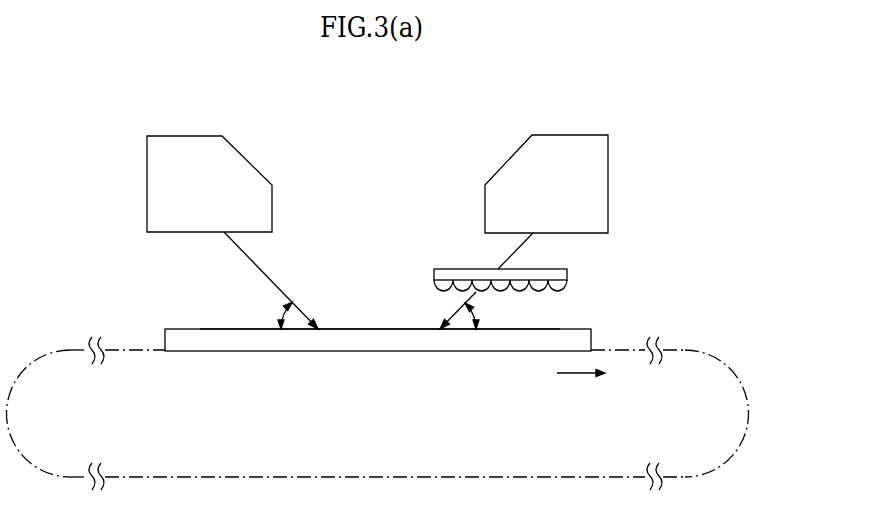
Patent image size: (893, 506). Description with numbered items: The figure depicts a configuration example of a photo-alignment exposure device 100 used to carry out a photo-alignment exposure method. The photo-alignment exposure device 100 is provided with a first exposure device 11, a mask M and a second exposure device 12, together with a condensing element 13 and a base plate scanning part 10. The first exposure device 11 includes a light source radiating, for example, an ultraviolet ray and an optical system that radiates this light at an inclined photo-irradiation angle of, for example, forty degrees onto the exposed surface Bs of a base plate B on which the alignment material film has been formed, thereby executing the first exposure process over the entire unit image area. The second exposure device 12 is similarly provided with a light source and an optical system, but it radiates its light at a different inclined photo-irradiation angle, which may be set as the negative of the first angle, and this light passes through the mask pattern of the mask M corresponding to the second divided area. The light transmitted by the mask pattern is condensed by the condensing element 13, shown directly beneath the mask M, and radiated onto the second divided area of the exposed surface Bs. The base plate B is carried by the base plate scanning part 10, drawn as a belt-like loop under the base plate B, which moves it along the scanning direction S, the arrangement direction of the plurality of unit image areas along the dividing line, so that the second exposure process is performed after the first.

The photo-alignment exposure device 100 is at (652, 142).
The base plate scanning part 10 is at (738, 373).
The first exposure device 11 is at (195, 135).
The second exposure device 12 is at (568, 135).
The condensing element 13 is at (434, 285).
The mask M is at (568, 275).
The base plate B is at (591, 340).
The exposed surface Bs is at (580, 322).
The scanning direction S is at (590, 375).